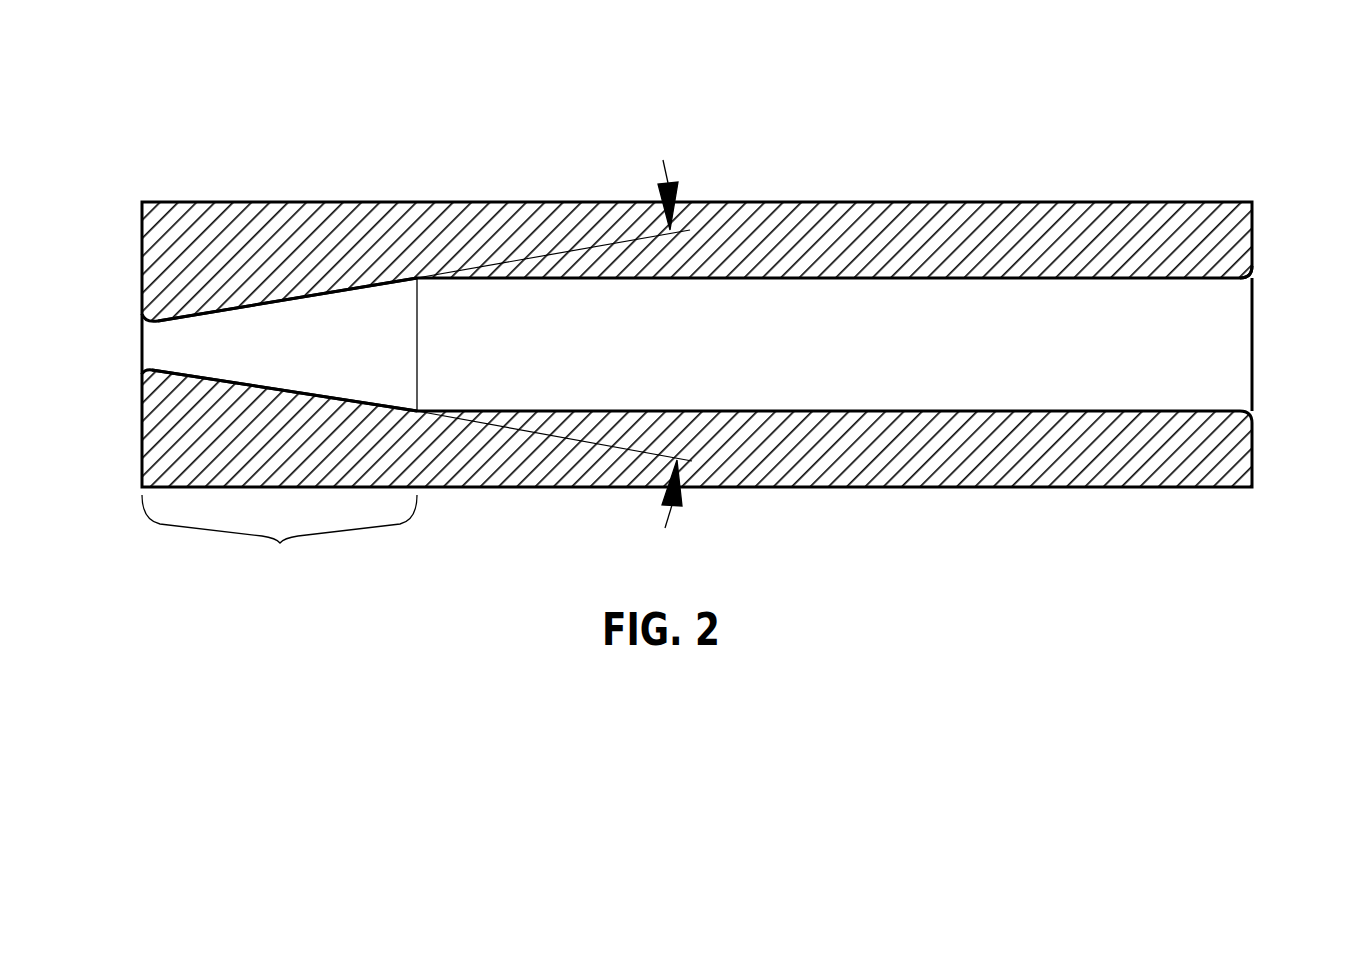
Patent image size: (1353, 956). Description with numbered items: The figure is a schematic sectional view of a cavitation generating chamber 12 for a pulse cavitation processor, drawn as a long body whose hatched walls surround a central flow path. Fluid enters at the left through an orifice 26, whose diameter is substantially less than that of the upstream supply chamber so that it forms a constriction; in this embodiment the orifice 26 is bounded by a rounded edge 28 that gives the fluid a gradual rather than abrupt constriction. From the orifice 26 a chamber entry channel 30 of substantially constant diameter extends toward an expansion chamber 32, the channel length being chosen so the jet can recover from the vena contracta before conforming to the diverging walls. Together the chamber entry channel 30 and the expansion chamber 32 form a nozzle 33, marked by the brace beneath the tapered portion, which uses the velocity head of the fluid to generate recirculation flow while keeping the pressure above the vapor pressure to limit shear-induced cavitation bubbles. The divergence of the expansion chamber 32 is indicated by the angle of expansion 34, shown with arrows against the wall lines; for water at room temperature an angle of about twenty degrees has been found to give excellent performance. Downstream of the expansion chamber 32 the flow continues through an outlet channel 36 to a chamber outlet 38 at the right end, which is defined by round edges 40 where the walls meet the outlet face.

The cavitation generating chamber 12 is at (701, 330).
The orifice 26 is at (141, 348).
The rounded edge 28 is at (141, 370).
The chamber entry channel 30 is at (148, 322).
The expansion chamber 32 is at (268, 308).
The nozzle 33 is at (279, 535).
The angle of expansion 34 is at (554, 330).
The outlet channel 36 is at (725, 411).
The chamber outlet 38 is at (1252, 352).
The round edges 40 is at (1245, 282).